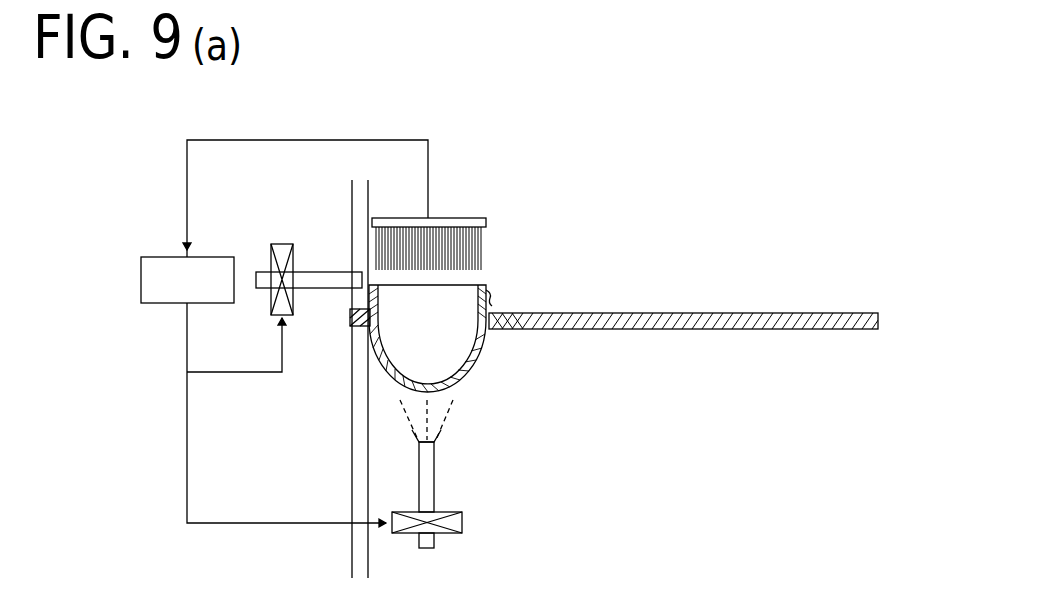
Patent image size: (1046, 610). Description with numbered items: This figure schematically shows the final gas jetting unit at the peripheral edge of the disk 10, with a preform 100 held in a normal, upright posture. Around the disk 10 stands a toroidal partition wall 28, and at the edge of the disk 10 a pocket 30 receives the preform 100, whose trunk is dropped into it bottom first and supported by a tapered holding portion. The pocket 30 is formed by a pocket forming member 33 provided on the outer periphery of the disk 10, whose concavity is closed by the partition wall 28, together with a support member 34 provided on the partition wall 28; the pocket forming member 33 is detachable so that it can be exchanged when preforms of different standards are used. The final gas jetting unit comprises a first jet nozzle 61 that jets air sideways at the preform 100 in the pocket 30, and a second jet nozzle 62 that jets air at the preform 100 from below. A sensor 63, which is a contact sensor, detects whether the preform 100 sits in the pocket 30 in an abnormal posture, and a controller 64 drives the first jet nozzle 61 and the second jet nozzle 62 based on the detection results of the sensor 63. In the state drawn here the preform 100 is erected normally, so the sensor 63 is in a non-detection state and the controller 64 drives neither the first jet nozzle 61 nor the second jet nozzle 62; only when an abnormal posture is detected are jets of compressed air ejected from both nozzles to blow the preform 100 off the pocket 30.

The disk 10 is at (558, 335).
The partition wall 28 is at (348, 207).
The pocket 30 is at (495, 268).
The pocket forming member 33 is at (515, 313).
The support member 34 is at (351, 328).
The first jet nozzle 61 is at (288, 322).
The second jet nozzle 62 is at (463, 523).
The sensor 63 is at (463, 216).
The controller 64 is at (165, 255).
The preform 100 is at (377, 281).